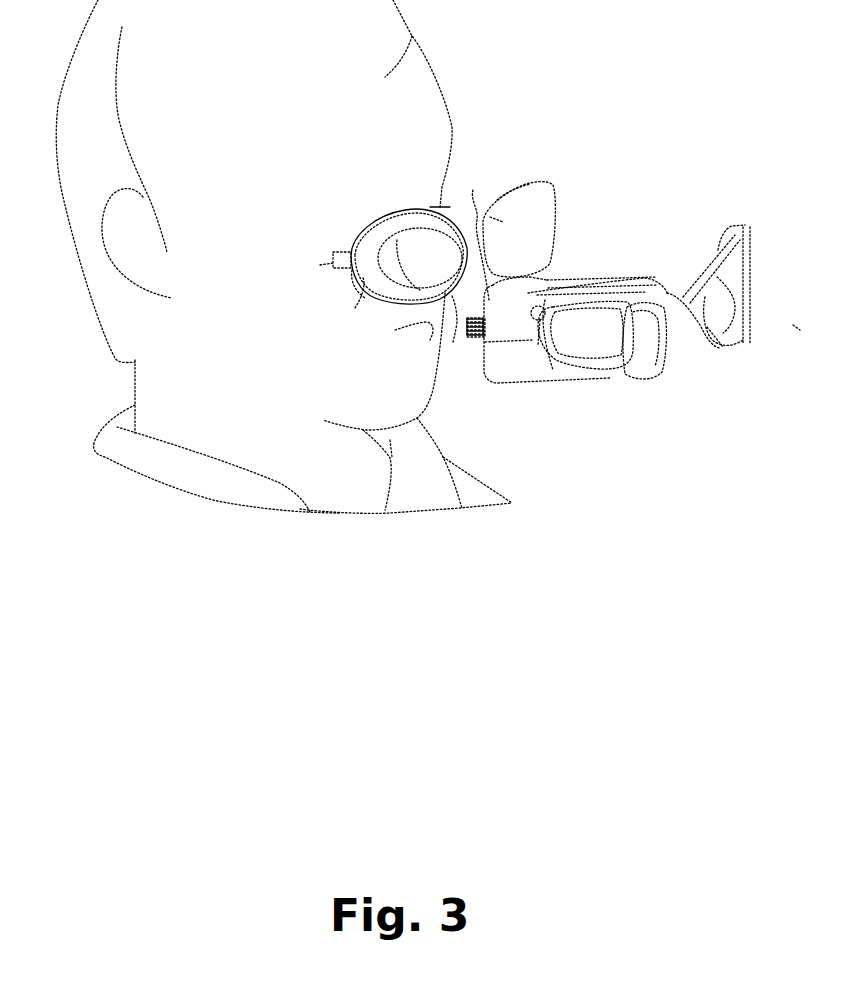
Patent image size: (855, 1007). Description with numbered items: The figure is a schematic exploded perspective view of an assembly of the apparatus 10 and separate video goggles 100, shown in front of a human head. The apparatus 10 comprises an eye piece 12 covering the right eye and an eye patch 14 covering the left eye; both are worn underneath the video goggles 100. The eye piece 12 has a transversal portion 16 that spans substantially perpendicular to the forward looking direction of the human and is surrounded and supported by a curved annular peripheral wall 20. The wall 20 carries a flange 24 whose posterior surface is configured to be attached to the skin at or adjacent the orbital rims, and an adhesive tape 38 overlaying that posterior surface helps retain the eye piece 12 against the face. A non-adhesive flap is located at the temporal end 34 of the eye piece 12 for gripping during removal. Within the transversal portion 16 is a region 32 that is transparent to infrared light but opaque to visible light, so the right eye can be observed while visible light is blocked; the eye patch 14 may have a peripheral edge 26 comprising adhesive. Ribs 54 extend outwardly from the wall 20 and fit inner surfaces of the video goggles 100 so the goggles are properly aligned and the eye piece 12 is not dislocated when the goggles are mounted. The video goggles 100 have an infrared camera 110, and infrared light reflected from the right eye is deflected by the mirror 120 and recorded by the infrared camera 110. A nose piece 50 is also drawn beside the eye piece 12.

The apparatus 10 is at (480, 233).
The eye piece 12 is at (348, 301).
The eye patch 14 is at (533, 248).
The transversal portion 16 is at (460, 330).
The curved annular peripheral wall 20 is at (400, 272).
The flange 24 is at (433, 192).
The peripheral edge 26 is at (518, 198).
The region 32 is at (413, 245).
The temporal end 34 is at (352, 273).
The adhesive tape 38 is at (380, 225).
The nose pad 50 is at (332, 266).
The ribs 54 is at (400, 294).
The video goggles 100 is at (523, 387).
The infrared camera 110 is at (570, 375).
The mirror 120 is at (647, 350).